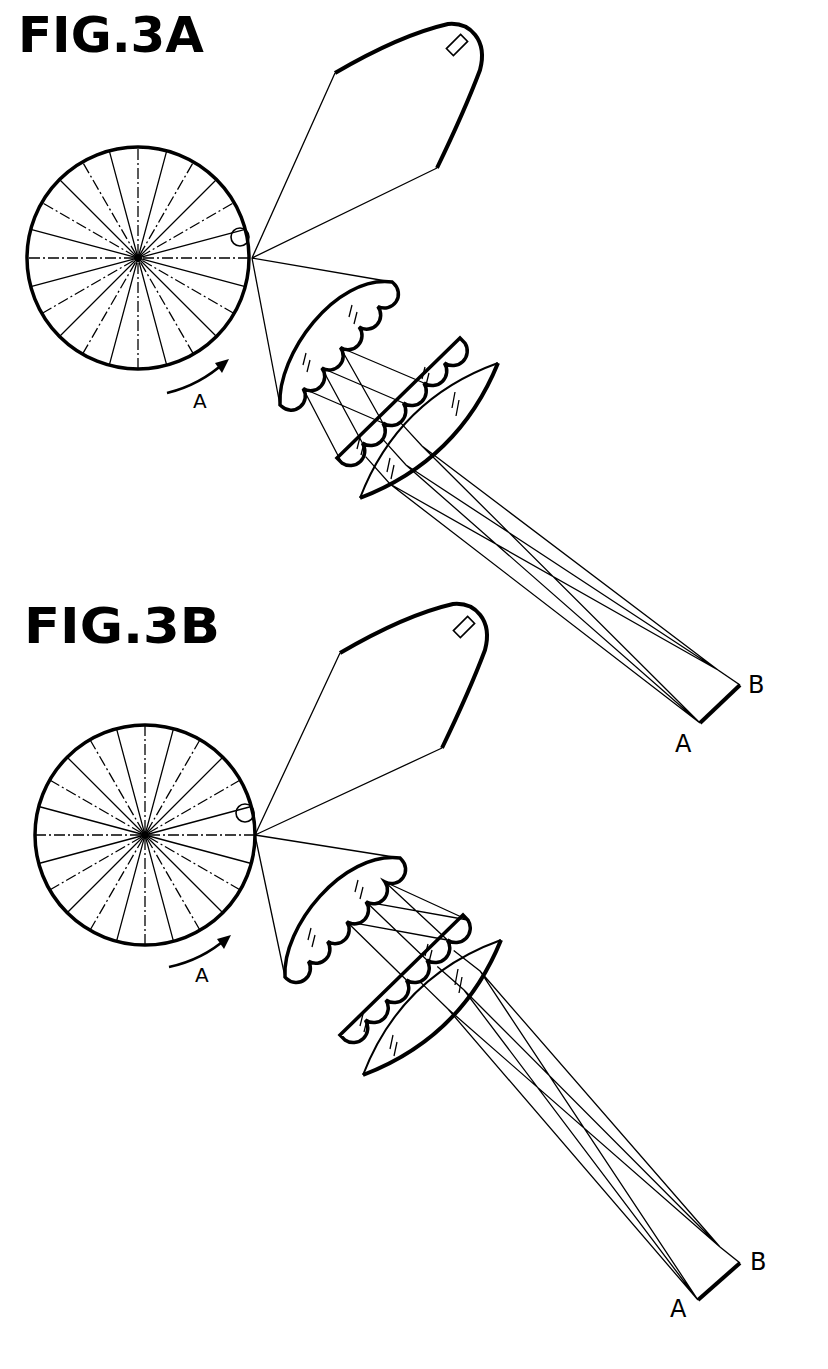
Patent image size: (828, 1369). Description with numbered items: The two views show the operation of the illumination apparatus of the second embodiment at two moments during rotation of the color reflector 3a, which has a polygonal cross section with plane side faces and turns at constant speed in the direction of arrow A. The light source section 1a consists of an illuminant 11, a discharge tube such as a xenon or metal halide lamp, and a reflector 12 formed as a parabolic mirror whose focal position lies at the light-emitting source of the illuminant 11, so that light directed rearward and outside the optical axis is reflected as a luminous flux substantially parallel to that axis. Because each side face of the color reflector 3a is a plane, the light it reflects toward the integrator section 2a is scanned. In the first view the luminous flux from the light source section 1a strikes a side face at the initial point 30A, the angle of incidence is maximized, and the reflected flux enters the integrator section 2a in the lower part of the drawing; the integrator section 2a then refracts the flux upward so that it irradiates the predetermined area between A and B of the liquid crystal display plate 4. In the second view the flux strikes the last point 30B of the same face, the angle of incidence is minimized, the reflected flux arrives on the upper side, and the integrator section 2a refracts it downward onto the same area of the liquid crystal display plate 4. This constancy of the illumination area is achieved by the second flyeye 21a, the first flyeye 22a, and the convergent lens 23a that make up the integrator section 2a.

In FIG. 3A, the color reflector 3a is at (182, 152).
In FIG. 3B, the color reflector 3a is at (185, 727).
In FIG. 3A, the initial point 30A is at (240, 228).
In FIG. 3B, the last point 30B is at (247, 803).
In FIG. 3A, the light source section 1a is at (449, 96).
In FIG. 3B, the light source section 1a is at (458, 676).
In FIG. 3A, the illuminant 11 is at (450, 52).
In FIG. 3B, the illuminant 11 is at (455, 634).
In FIG. 3A, the reflector 12 is at (480, 77).
In FIG. 3B, the reflector 12 is at (486, 677).
In FIG. 3A, the integrator section 2a is at (417, 391).
In FIG. 3B, the integrator section 2a is at (420, 957).
In FIG. 3A, the second flyeye 21a is at (393, 283).
In FIG. 3B, the second flyeye 21a is at (401, 857).
In FIG. 3A, the first flyeye 22a is at (461, 338).
In FIG. 3B, the first flyeye 22a is at (466, 917).
In FIG. 3A, the convergent lens 23a is at (499, 364).
In FIG. 3B, the convergent lens 23a is at (502, 940).
In FIG. 3A, the liquid crystal display plate 4 is at (716, 703).
In FIG. 3B, the liquid crystal display plate 4 is at (716, 1278).